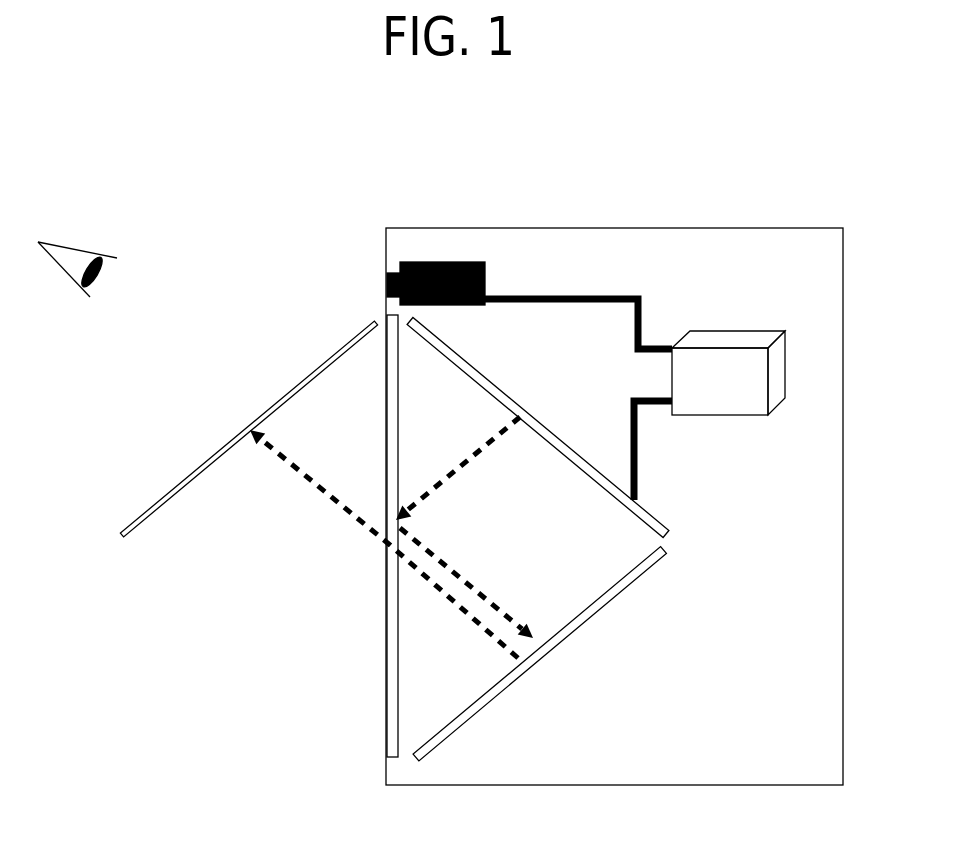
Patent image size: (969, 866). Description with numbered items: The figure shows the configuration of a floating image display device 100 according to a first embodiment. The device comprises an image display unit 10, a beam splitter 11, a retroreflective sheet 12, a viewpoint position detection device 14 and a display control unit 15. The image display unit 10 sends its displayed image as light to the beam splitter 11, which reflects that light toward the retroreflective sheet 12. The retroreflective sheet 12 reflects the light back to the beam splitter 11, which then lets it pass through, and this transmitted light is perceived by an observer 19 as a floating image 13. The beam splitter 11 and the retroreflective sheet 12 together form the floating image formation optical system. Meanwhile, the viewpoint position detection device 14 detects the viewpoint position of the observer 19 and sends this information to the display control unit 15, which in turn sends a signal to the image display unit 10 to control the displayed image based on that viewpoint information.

The floating image display device 100 is at (603, 228).
The image display unit 10 is at (500, 388).
The beam splitter 11 is at (387, 653).
The retroreflective sheet 12 is at (547, 652).
The floating image 13 is at (137, 532).
The viewpoint position detection device 14 is at (483, 275).
The display control unit 15 is at (707, 347).
The observer 19 is at (97, 257).